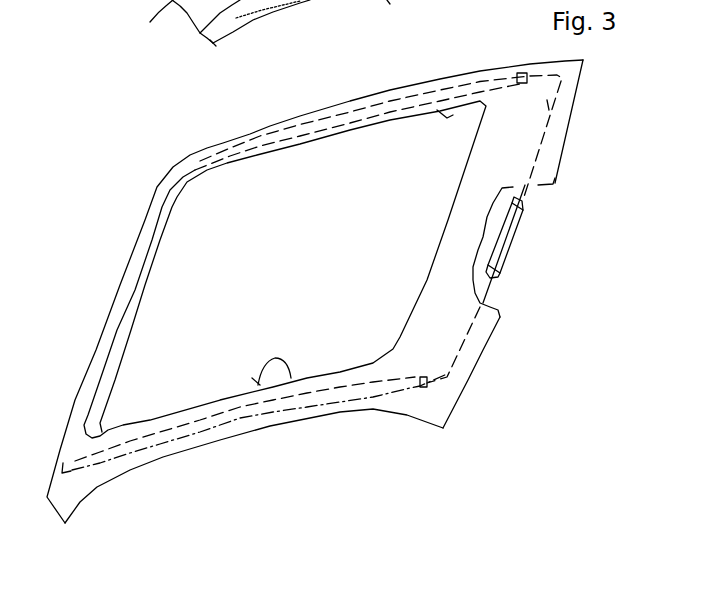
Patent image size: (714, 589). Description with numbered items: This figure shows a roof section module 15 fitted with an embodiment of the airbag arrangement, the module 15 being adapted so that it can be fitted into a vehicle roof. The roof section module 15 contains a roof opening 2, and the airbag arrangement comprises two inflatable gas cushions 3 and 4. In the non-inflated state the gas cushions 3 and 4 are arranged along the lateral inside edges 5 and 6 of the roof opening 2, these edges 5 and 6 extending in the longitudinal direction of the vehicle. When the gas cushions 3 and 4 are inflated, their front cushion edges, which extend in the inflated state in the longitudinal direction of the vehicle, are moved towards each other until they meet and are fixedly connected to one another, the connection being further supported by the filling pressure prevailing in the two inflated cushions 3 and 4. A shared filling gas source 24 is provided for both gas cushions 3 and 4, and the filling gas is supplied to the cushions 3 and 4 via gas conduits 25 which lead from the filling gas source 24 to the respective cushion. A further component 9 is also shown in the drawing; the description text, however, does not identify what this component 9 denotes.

The roof opening 2 is at (175, 267).
The inflatable gas cushion 3 is at (284, 134).
The inflatable gas cushion 4 is at (213, 425).
The lateral inside edge 5 is at (292, 160).
The lateral inside edge 6 is at (290, 357).
The hinge 9 is at (257, 27).
The roof section module 15 is at (498, 368).
The filling gas source 24 is at (518, 243).
The gas conduit 25 is at (538, 140).